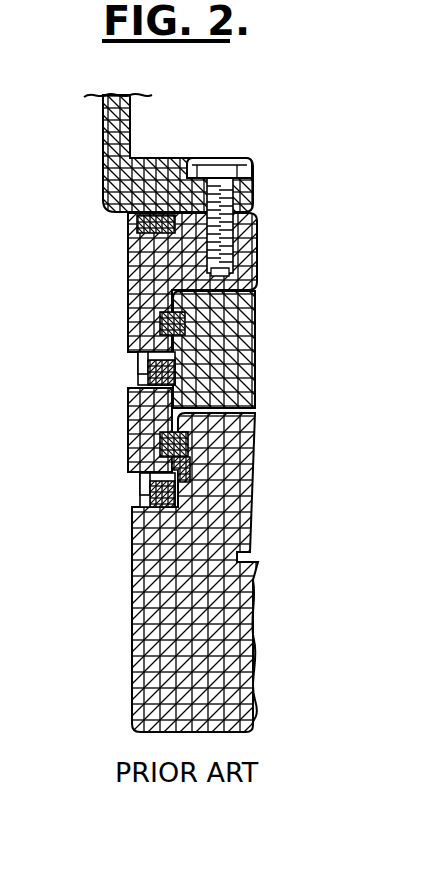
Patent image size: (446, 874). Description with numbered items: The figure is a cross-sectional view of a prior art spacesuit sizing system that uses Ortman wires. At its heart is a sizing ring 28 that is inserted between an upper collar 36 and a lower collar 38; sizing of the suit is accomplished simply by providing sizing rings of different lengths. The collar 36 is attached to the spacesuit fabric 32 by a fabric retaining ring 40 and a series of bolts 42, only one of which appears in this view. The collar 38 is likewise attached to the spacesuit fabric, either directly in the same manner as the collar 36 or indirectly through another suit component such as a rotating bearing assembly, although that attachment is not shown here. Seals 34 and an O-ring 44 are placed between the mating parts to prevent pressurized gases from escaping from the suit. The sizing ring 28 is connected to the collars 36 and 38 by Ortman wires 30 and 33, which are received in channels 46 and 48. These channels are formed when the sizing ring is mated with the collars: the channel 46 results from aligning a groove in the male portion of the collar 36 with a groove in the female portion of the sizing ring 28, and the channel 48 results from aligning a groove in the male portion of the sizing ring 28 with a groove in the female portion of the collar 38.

The sizing ring 28 is at (146, 426).
The Ortman wire 30 is at (175, 330).
The spacesuit fabric 32 is at (101, 133).
The Ortman wire 33 is at (176, 470).
The seals 34 is at (140, 385).
The collar 36 is at (148, 263).
The collar 38 is at (155, 627).
The fabric retaining ring 40 is at (184, 157).
The bolt 42 is at (258, 218).
The O-ring 44 is at (130, 218).
The channel 46 is at (160, 322).
The channel 48 is at (160, 446).